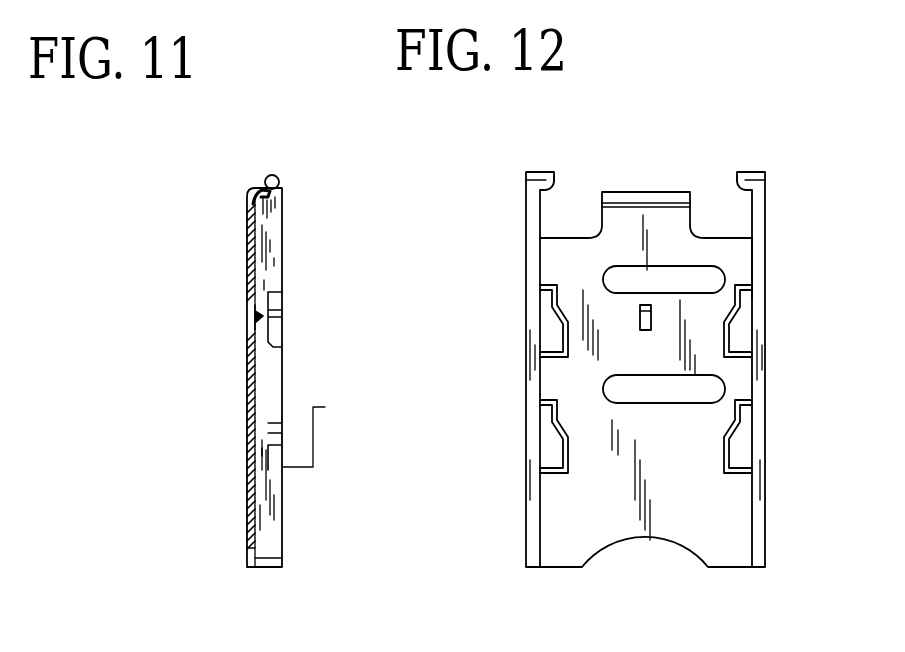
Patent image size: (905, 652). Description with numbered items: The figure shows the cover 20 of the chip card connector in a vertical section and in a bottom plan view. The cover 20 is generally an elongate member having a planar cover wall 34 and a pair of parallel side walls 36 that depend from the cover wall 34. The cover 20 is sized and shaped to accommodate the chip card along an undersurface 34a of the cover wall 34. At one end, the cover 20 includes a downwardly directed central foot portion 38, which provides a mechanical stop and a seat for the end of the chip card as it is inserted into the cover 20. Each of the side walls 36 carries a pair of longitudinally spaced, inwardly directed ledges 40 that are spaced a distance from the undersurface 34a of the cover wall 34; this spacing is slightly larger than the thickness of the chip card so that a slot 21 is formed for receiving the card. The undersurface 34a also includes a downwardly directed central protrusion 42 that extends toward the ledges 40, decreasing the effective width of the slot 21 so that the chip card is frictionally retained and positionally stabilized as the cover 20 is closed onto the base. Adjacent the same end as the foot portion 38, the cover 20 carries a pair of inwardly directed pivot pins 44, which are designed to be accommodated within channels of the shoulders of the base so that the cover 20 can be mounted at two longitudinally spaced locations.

In FIG. 11, the cover 20 is at (317, 298).
In FIG. 12, the cover 20 is at (781, 161).
In FIG. 11, the slot 21 is at (262, 448).
In FIG. 11, the cover wall 34 is at (248, 252).
In FIG. 11, the undersurface 34a is at (257, 523).
In FIG. 12, the undersurface 34a is at (738, 258).
In FIG. 12, the side walls 36 is at (532, 534).
In FIG. 11, the central foot portion 38 is at (258, 189).
In FIG. 12, the central foot portion 38 is at (645, 199).
In FIG. 11, the ledges 40 is at (277, 327).
In FIG. 11, the central protrusion 42 is at (255, 313).
In FIG. 12, the central protrusion 42 is at (651, 317).
In FIG. 11, the pivot pins 44 is at (280, 181).
In FIG. 12, the pivot pins 44 is at (738, 181).